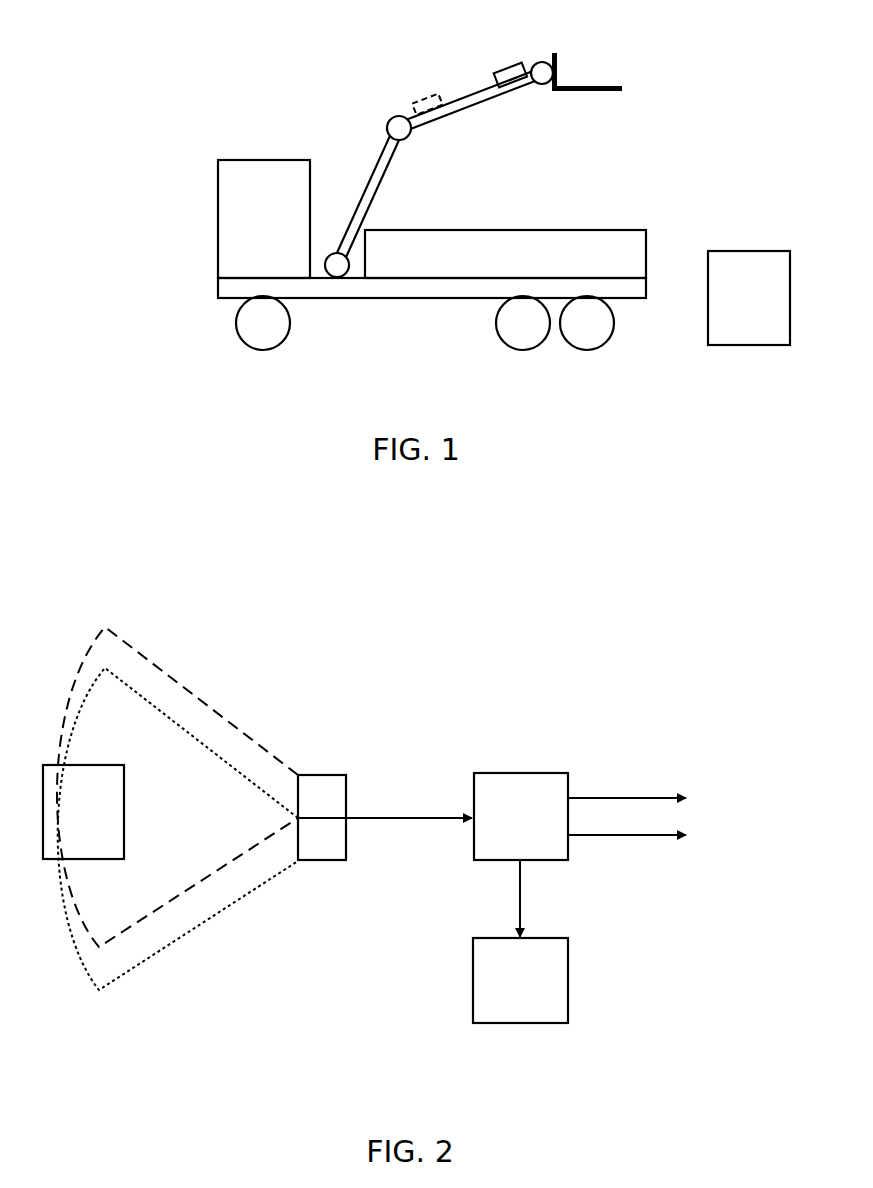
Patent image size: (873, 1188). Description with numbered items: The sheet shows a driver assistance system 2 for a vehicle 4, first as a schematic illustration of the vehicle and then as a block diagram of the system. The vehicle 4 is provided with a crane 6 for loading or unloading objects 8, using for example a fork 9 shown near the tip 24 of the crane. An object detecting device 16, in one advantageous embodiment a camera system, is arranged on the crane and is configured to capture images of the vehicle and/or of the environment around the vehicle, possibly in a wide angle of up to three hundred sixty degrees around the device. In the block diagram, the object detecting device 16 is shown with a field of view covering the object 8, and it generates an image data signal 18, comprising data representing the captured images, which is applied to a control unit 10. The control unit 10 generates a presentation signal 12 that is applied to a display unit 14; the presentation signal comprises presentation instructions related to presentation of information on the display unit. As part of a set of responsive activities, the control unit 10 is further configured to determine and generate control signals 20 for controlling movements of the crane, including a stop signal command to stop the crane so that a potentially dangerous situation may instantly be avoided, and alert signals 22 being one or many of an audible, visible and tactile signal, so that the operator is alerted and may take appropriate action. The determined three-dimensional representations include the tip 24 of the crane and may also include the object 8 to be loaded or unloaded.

In FIG. 2, the driver assistance system 2 is at (596, 679).
In FIG. 1, the vehicle 4 is at (283, 87).
In FIG. 1, the crane 6 is at (380, 86).
In FIG. 1, the object 8 is at (749, 298).
In FIG. 2, the object 8 is at (83, 812).
In FIG. 1, the fork 9 is at (590, 53).
In FIG. 2, the control unit 10 is at (521, 816).
In FIG. 2, the presentation signal 12 is at (537, 898).
In FIG. 2, the display unit 14 is at (520, 980).
In FIG. 1, the object detecting device 16 is at (428, 99).
In FIG. 2, the object detecting device 16 is at (327, 775).
In FIG. 2, the image data signal 18 is at (409, 805).
In FIG. 2, the control signals 20 is at (627, 785).
In FIG. 2, the alert signals 22 is at (627, 853).
In FIG. 1, the tip of the crane 24 is at (524, 80).